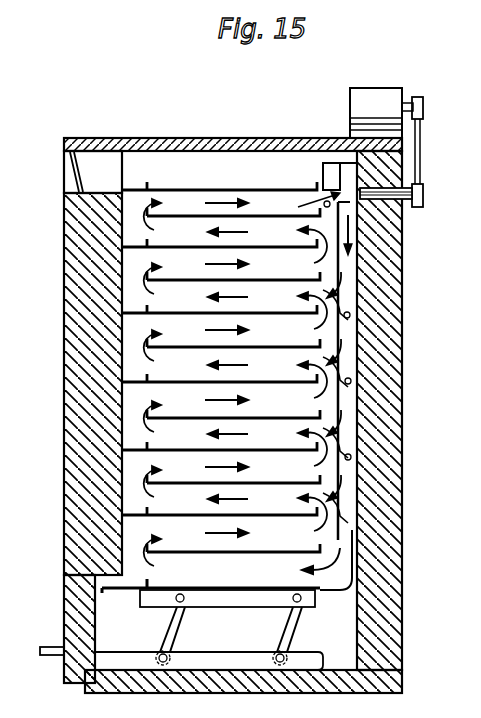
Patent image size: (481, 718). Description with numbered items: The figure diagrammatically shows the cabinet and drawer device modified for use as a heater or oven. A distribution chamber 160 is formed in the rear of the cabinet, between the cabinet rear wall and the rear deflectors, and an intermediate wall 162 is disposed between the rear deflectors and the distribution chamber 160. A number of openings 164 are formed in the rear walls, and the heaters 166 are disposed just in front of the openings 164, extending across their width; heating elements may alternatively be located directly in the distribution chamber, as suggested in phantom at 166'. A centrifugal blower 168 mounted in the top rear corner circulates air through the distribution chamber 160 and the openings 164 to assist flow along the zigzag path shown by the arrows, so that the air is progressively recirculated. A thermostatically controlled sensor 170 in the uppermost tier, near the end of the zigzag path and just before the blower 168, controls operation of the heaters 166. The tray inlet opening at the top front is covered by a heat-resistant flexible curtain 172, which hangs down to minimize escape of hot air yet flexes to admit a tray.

The distribution chamber 160 is at (348, 378).
The intermediate wall 162 is at (348, 446).
The openings 164 is at (346, 286).
The heaters 166 is at (354, 406).
The damper latch 166' is at (400, 366).
The centrifugal blower 168 is at (379, 95).
The thermostatically controlled sensor 170 is at (322, 204).
The flexible curtain 172 is at (67, 172).